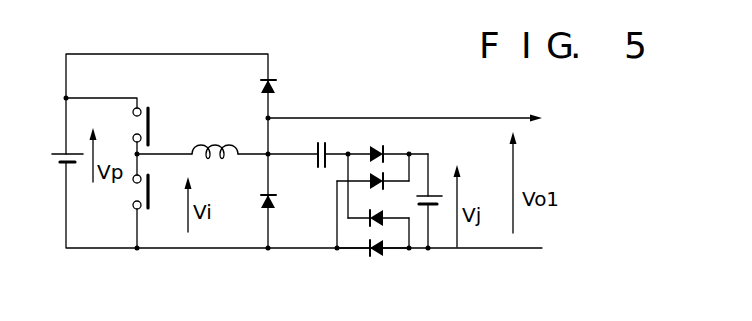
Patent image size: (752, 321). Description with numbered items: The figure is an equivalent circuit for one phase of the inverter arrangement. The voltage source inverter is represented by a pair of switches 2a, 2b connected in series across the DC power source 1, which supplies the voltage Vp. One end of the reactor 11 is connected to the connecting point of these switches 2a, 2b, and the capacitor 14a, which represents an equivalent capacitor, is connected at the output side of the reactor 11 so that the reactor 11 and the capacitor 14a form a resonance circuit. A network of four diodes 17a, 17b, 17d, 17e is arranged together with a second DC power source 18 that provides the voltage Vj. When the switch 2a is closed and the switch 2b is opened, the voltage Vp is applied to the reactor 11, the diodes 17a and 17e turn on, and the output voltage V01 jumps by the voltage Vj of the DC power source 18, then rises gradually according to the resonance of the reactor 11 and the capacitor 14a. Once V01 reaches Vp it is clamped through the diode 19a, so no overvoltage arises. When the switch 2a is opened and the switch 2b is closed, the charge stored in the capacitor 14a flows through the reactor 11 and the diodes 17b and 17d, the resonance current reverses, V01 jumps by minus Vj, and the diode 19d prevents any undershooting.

The DC power source 1 is at (51, 144).
The switch 2a is at (158, 129).
The switch 2b is at (154, 188).
The reactor 11 is at (212, 148).
The diode 19a is at (283, 73).
The diode 19d is at (266, 199).
The capacitor 14a is at (321, 170).
The diode 17a is at (376, 146).
The diode 17b is at (376, 188).
The diode 17d is at (363, 227).
The diode 17e is at (385, 256).
The DC power source 18 is at (442, 206).